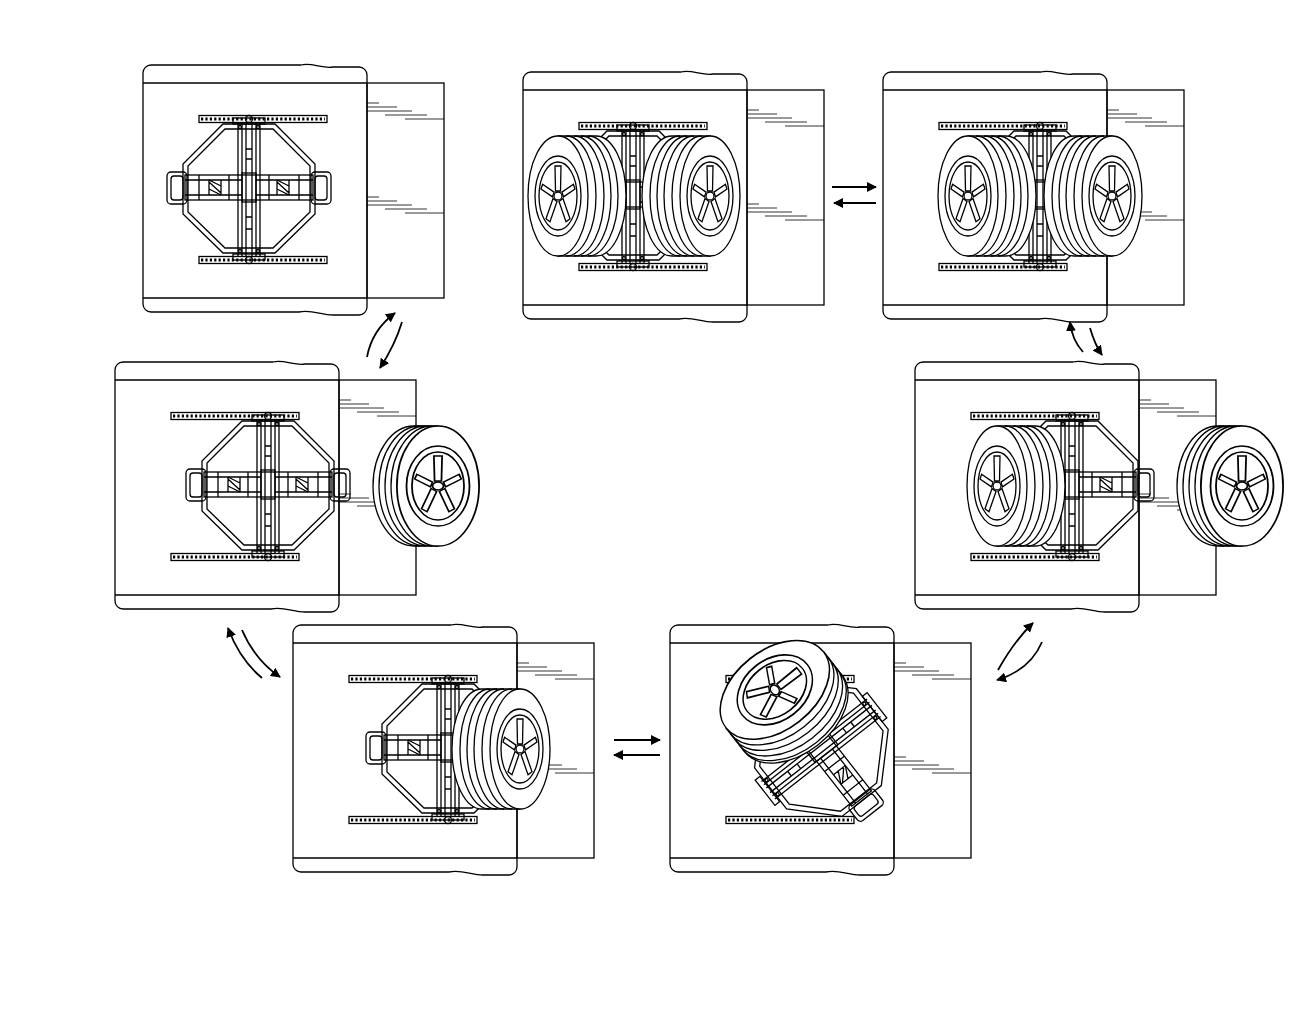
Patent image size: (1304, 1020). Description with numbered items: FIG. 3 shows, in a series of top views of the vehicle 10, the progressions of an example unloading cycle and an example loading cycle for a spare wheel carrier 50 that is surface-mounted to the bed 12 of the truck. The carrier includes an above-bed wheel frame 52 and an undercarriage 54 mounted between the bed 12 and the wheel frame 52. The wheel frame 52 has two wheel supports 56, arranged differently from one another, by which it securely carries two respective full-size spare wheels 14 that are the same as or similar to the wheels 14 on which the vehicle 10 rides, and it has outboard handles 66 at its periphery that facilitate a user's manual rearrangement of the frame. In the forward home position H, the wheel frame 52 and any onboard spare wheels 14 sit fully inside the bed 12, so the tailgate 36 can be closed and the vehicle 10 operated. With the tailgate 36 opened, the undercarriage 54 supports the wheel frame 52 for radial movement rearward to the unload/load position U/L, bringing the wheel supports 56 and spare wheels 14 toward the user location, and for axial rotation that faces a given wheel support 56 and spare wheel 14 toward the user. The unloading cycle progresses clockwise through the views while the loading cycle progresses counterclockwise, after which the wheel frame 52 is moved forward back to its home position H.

The vehicle 10 is at (697, 456).
The bed 12 is at (188, 102).
The wheels 14 is at (552, 148).
The tailgate 36 is at (390, 83).
The spare wheel carrier 50 is at (195, 263).
The wheel frame 52 is at (280, 127).
The undercarriage 54 is at (243, 268).
The wheel supports 56 is at (217, 177).
The outboard handles 66 is at (317, 175).